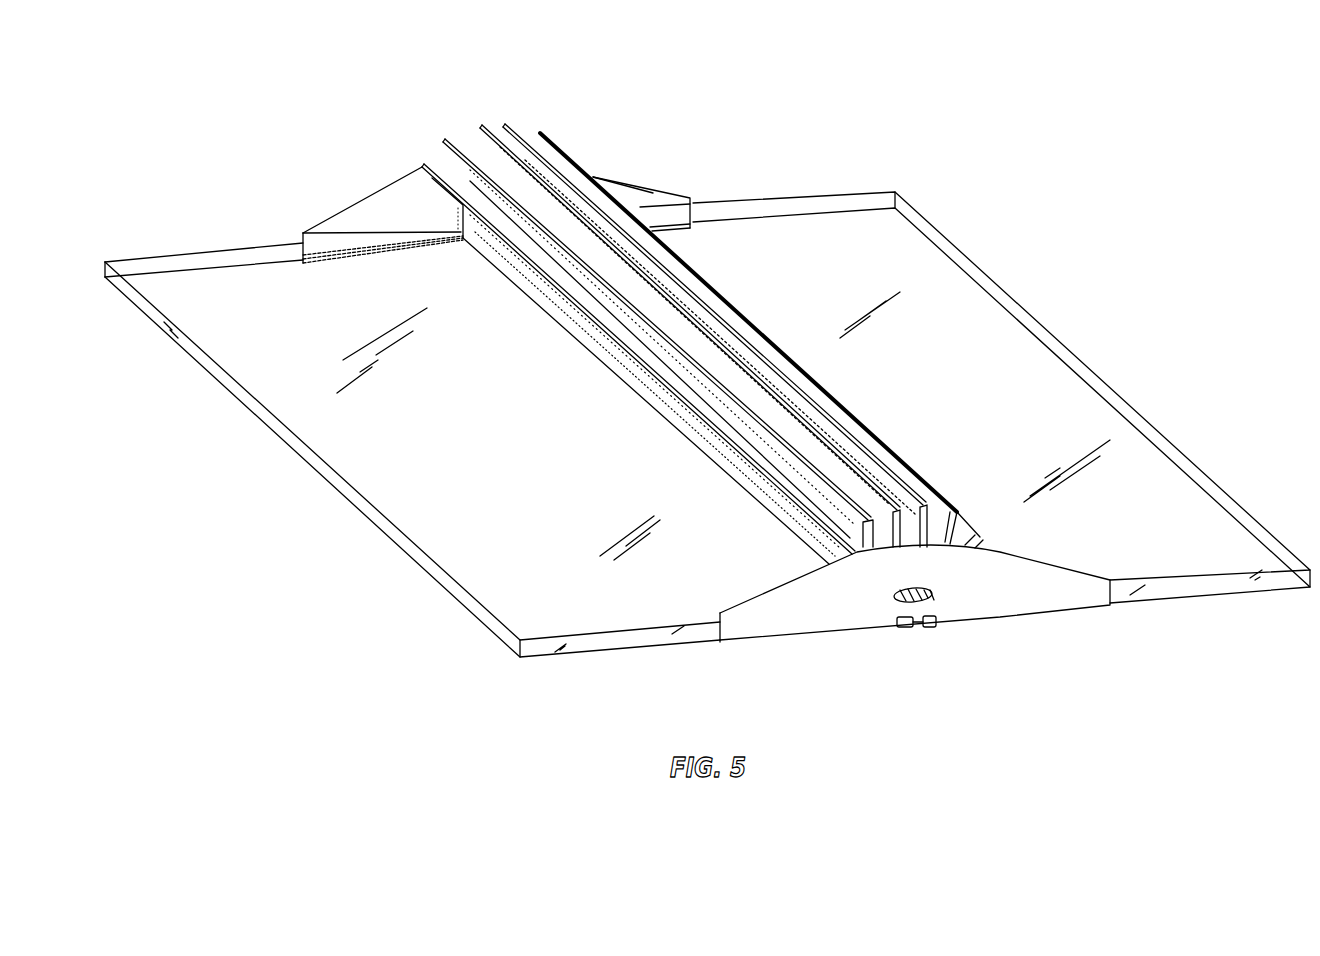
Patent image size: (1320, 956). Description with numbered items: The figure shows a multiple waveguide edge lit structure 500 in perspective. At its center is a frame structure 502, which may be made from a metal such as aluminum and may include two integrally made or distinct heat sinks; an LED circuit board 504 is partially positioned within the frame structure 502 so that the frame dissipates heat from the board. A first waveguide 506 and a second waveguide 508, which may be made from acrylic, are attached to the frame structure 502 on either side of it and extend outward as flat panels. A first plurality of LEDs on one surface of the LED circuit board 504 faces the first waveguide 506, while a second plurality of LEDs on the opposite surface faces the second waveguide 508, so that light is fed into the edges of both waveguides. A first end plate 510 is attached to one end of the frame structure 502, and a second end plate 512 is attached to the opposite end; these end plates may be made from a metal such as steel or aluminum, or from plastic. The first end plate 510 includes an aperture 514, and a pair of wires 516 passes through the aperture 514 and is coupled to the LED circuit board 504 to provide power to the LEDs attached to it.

The multiple waveguide edge lit structure 500 is at (1060, 63).
The frame structure 502 is at (520, 138).
The LED circuit board 504 is at (915, 628).
The first waveguide 506 is at (333, 446).
The second waveguide 508 is at (1028, 342).
The first end plate 510 is at (1046, 575).
The second end plate 512 is at (367, 220).
The aperture 514 is at (937, 595).
The pair of wires 516 is at (914, 588).